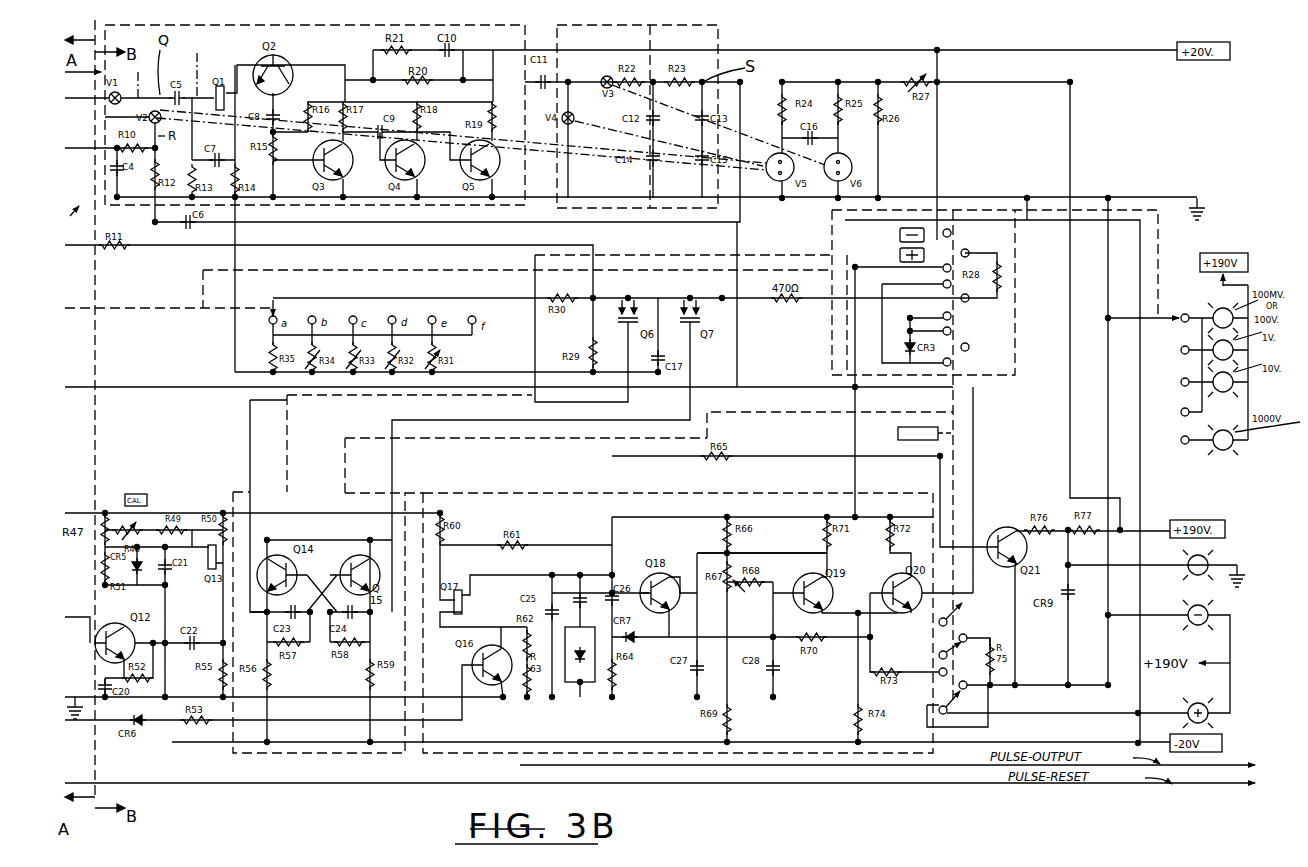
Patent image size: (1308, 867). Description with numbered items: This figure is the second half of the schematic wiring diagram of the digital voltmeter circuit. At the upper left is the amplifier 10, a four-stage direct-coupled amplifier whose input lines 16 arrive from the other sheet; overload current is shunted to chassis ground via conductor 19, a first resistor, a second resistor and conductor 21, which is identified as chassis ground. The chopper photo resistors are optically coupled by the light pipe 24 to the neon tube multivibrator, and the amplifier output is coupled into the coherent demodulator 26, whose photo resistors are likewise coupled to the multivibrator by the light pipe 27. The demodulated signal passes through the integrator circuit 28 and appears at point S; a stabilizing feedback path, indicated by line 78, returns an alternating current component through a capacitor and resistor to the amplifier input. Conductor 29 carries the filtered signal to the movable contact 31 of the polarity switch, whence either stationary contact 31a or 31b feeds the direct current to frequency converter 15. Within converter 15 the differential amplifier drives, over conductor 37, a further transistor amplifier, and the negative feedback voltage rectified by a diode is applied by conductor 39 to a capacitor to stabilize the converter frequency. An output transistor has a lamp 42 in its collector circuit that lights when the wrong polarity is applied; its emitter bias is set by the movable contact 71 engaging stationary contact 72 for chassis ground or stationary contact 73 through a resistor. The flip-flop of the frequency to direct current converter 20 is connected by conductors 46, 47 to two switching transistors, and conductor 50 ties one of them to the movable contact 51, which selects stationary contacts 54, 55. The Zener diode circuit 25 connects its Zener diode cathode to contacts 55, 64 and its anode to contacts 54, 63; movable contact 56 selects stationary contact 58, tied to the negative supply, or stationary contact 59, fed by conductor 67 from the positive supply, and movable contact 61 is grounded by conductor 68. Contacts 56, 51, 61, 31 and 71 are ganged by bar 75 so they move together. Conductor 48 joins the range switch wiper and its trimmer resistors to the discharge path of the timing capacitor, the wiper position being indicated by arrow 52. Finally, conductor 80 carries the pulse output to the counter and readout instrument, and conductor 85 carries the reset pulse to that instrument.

The amplifier 10 is at (352, 30).
The direct current to frequency converter 15 is at (567, 491).
The input lines 16 is at (84, 156).
The conductor 19 is at (354, 257).
The frequency to direct current converter 20 is at (281, 429).
The conductor 21 is at (235, 336).
The optical coupling 24 is at (164, 67).
The Zener diode circuit 25 is at (1018, 369).
The coherent demodulator 26 is at (620, 30).
The light transmitting means 27 is at (630, 100).
The integrator circuit 28 is at (724, 32).
The conductor 29 is at (797, 388).
The movable contact 31 is at (978, 654).
The negative signal stationary contact 31a is at (966, 616).
The positive signal stationary contact 31b is at (939, 655).
The conductor 37 is at (778, 554).
The conductor 39 is at (678, 638).
The lamp 42 is at (1188, 561).
The conductor 46 is at (250, 470).
The conductor 47 is at (392, 468).
The conductor 48 is at (390, 298).
The conductor 50 is at (166, 388).
The movable contact 51 is at (969, 300).
The switch wiper 52 is at (464, 305).
The stationary contact 54 is at (951, 316).
The stationary contact 55 is at (943, 285).
The movable contact 56 is at (968, 251).
The stationary contact 58 is at (950, 230).
The stationary contact 59 is at (943, 268).
The movable contact 61 is at (969, 348).
The stationary contact 63 is at (951, 331).
The stationary contact 64 is at (951, 364).
The conductor 67 is at (937, 111).
The conductor 68 is at (1018, 253).
The movable contact 71 is at (964, 699).
The stationary contact 72 is at (937, 717).
The stationary contact 73 is at (949, 697).
The bar 75 is at (953, 444).
The line 78 is at (462, 230).
The conductor 80 is at (794, 766).
The conductor 85 is at (928, 784).